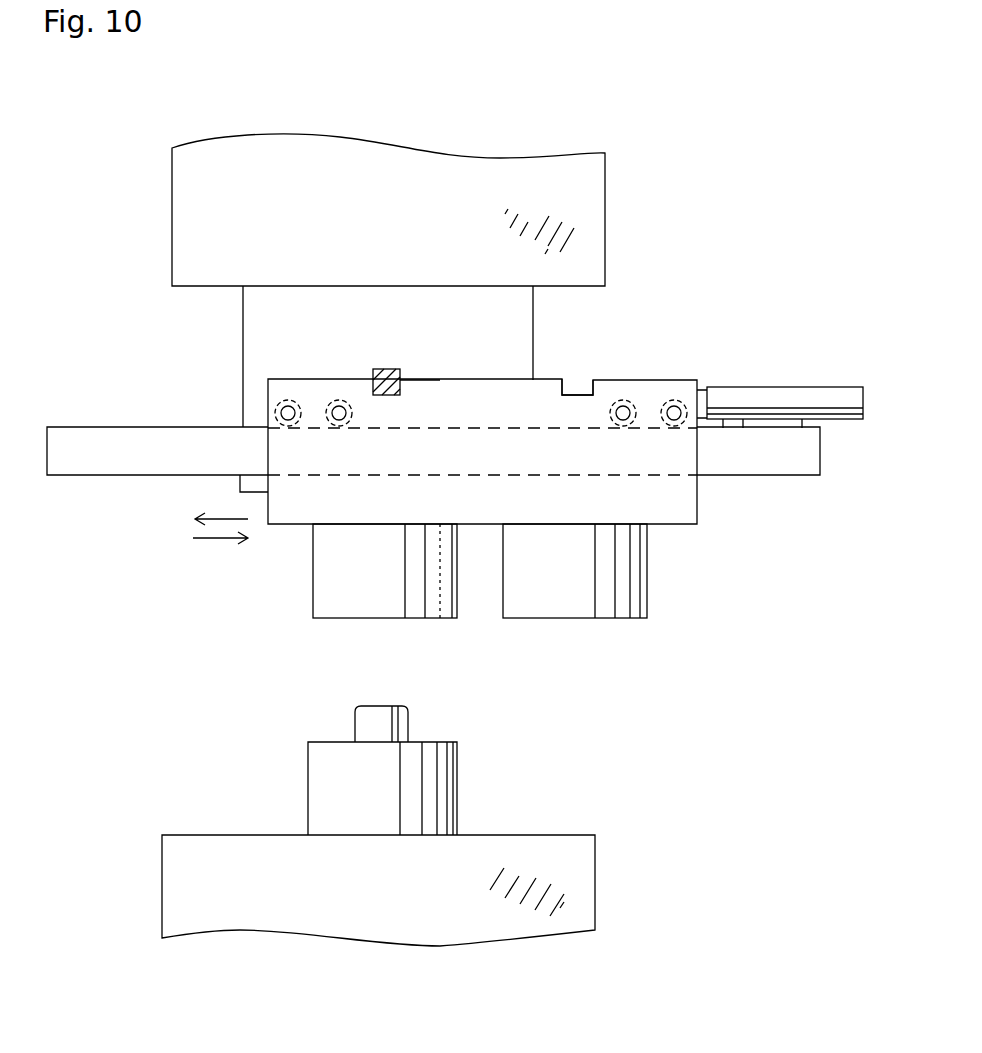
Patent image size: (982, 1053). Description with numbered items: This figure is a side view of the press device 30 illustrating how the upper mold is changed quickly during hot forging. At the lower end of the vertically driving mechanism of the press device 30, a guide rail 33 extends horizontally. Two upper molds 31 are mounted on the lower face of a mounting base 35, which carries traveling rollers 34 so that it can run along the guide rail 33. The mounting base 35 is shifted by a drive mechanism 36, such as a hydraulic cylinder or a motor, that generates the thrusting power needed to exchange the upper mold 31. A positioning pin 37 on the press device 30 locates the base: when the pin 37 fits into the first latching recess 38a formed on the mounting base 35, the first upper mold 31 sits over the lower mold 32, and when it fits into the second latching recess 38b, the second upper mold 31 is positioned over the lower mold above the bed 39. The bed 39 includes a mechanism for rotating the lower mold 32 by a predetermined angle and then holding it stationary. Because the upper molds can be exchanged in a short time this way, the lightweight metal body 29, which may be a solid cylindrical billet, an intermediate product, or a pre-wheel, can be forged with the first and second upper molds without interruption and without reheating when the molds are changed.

The lightweight metal body 29 is at (410, 723).
The press device 30 is at (595, 240).
The upper mold 31 is at (315, 585).
The lower mold 32 is at (455, 790).
The guide rail 33 is at (145, 462).
The traveling rollers 34 is at (336, 398).
The mounting base 35 is at (686, 497).
The drive mechanism 36 is at (782, 390).
The positioning pin 37 is at (389, 369).
The first latching recess 38a is at (404, 383).
The second latching recess 38b is at (585, 368).
The bed 39 is at (585, 877).